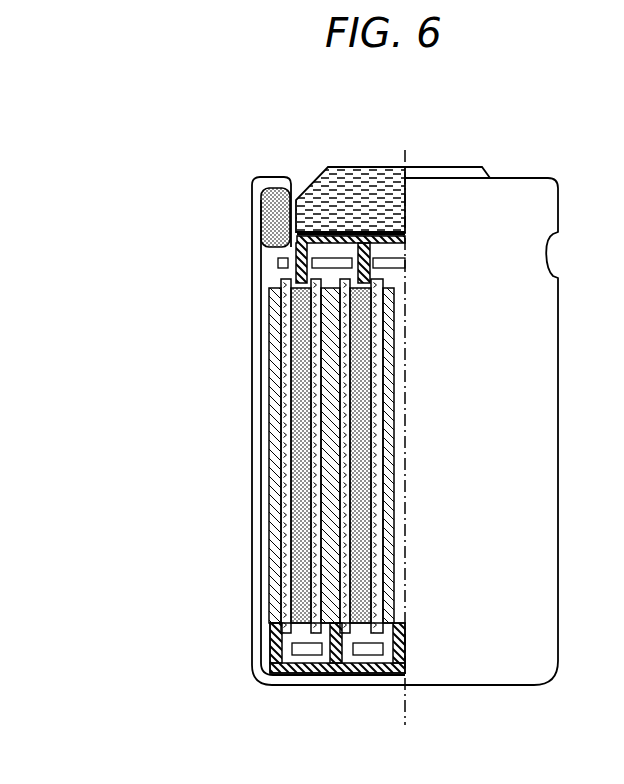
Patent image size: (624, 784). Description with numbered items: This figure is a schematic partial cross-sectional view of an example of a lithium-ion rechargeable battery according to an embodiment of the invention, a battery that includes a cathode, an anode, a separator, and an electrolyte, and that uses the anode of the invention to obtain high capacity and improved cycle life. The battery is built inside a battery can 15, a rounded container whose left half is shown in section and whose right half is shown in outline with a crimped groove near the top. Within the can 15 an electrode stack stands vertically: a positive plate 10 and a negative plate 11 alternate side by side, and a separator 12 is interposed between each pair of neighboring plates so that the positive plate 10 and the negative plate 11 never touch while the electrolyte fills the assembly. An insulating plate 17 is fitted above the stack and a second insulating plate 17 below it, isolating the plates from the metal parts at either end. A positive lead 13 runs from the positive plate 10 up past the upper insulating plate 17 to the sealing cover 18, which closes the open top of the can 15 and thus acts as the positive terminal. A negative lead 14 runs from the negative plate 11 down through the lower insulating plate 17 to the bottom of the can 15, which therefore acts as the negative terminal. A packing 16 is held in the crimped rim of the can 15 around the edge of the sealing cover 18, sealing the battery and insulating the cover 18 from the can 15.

The positive plate 10 is at (365, 623).
The negative plate 11 is at (272, 536).
The separator 12 is at (285, 628).
The positive lead 13 is at (292, 247).
The negative lead 14 is at (303, 677).
The battery can 15 is at (252, 456).
The packing 16 is at (290, 194).
The insulating plate 17 is at (278, 263).
The sealing cover 18 is at (458, 167).